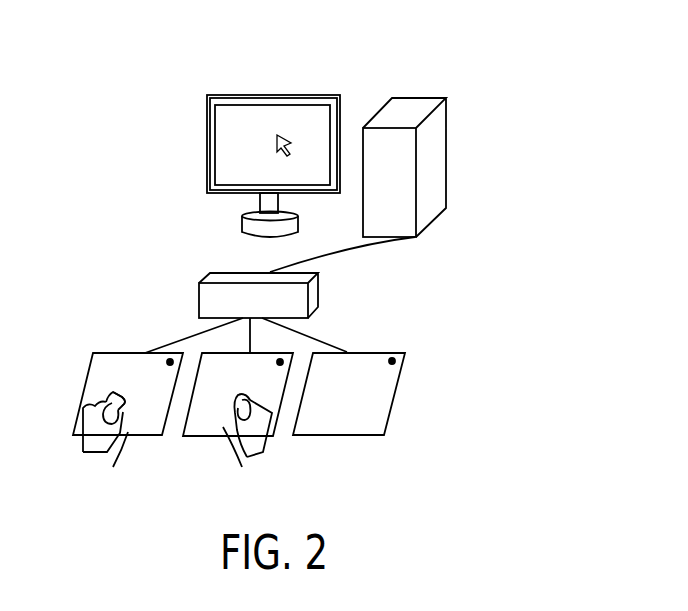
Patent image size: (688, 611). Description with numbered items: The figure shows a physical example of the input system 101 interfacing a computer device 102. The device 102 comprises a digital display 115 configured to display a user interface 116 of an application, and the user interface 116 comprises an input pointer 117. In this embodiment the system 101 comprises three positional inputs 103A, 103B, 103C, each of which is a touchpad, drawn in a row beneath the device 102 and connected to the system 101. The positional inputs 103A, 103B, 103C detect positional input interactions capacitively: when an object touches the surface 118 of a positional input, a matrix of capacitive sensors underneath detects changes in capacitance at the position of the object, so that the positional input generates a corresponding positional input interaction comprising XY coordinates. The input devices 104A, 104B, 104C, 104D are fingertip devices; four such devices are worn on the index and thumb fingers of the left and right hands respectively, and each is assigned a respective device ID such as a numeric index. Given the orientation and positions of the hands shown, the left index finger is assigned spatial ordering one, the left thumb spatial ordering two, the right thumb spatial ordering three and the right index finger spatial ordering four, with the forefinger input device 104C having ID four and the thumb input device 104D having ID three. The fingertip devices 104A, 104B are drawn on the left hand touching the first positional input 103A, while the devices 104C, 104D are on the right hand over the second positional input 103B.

The input system 101 is at (320, 292).
The computer device 102 is at (447, 117).
The positional input 103A is at (126, 428).
The positional input 103B is at (223, 428).
The positional input 103C is at (340, 426).
The input device 104A is at (118, 400).
The input device 104B is at (124, 402).
The forefinger input device 104C is at (230, 413).
The thumb input device 104D is at (250, 395).
The digital display 115 is at (332, 95).
The user interface 116 is at (230, 115).
The input pointer 117 is at (277, 142).
The surface 118 is at (382, 392).